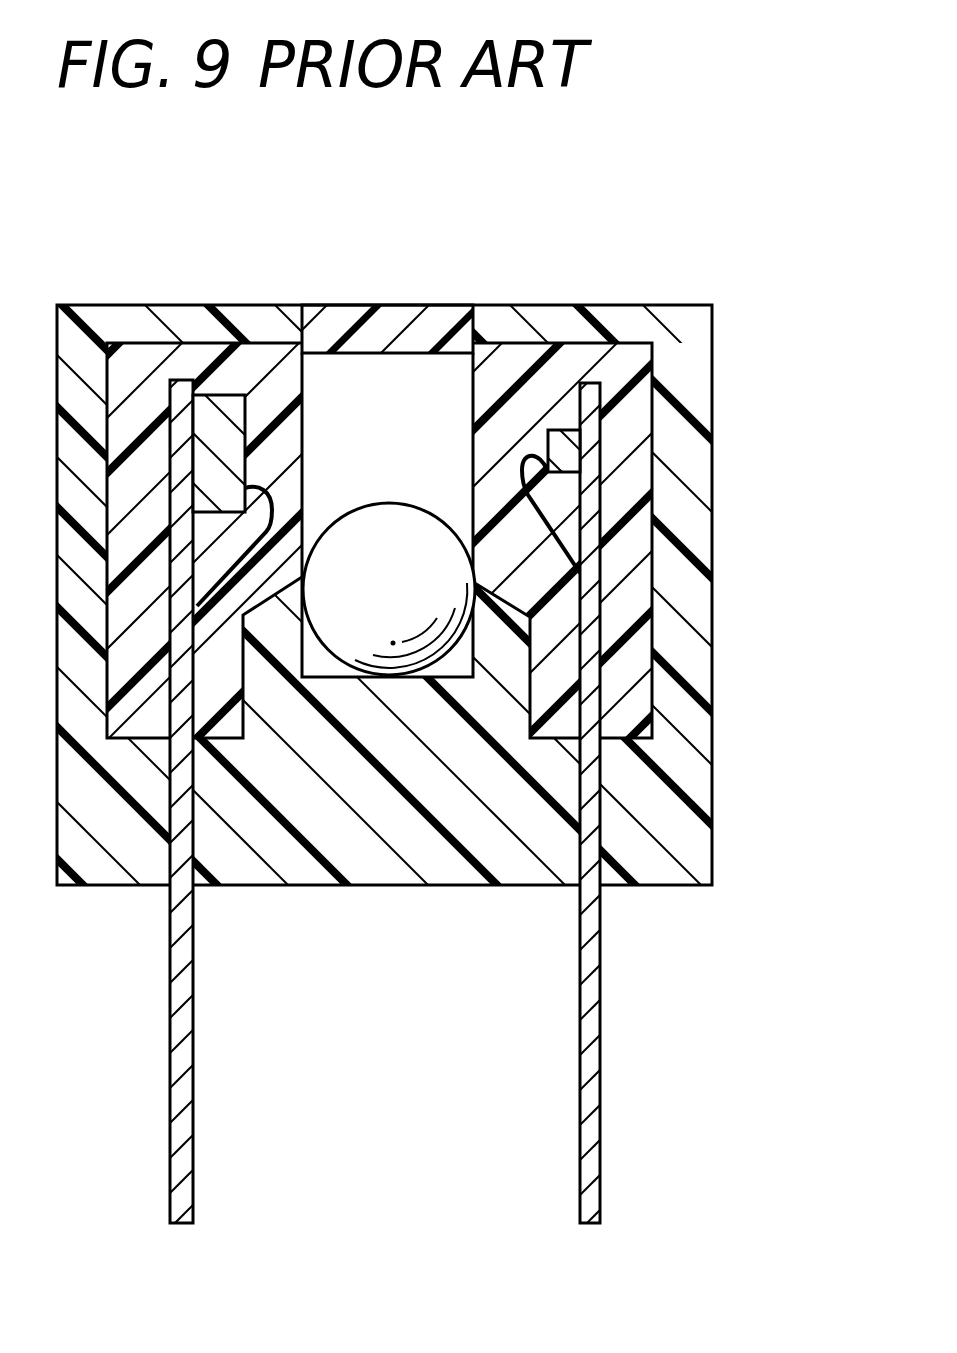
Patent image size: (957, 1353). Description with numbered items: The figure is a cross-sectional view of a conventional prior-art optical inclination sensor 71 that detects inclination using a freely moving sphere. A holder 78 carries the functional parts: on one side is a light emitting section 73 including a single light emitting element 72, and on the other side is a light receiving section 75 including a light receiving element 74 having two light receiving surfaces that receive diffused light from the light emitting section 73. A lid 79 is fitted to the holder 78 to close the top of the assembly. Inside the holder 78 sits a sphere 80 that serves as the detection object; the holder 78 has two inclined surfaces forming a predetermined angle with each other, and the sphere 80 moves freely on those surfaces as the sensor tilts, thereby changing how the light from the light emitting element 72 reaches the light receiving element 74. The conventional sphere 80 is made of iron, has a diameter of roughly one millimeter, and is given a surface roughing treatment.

The optical inclination sensor 71 is at (760, 209).
The light emitting element 72 is at (562, 437).
The light emitting section 73 is at (487, 443).
The light receiving element 74 is at (216, 412).
The light receiving section 75 is at (287, 440).
The holder 78 is at (662, 812).
The lid 79 is at (395, 325).
The sphere 80 is at (393, 523).